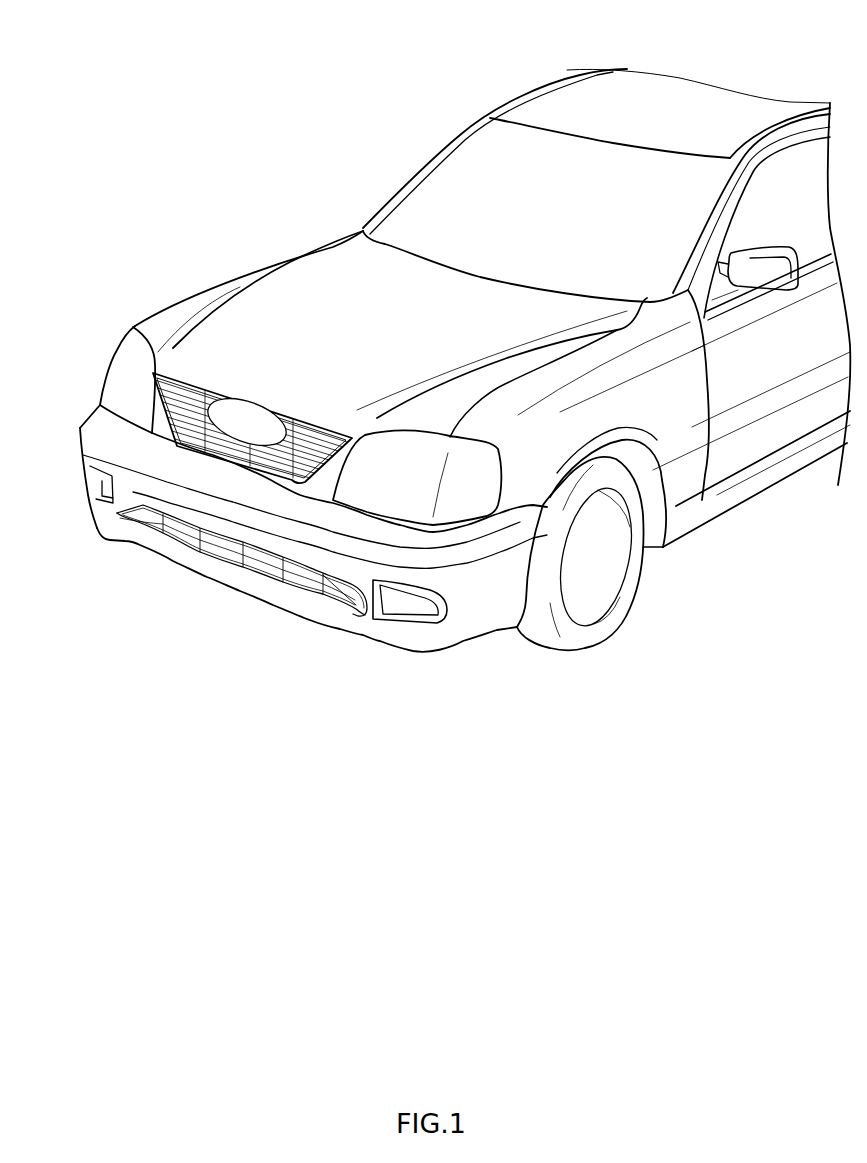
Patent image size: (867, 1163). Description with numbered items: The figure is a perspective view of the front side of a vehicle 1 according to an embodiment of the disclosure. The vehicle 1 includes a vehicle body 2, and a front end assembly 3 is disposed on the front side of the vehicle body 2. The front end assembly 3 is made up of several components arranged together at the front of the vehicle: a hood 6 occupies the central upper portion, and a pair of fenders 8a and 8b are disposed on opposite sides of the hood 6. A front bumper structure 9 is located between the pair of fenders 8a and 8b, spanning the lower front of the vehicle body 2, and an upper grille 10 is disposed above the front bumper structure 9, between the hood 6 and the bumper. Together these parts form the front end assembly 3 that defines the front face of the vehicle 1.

The vehicle 1 is at (164, 27).
The vehicle body 2 is at (502, 80).
The front end assembly 3 is at (87, 373).
The hood 6 is at (333, 262).
The fender 8a is at (537, 464).
The fender 8b is at (172, 320).
The front bumper structure 9 is at (123, 457).
The upper grille 10 is at (258, 376).